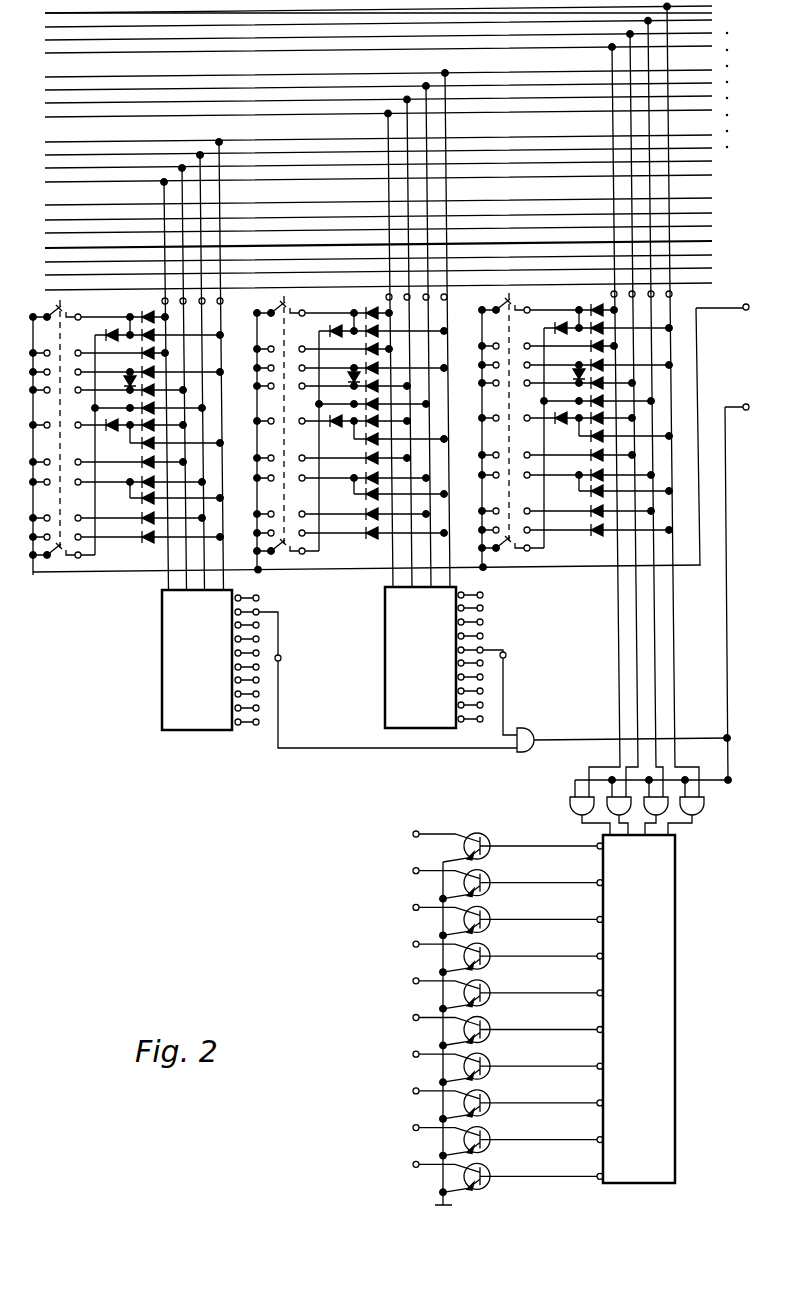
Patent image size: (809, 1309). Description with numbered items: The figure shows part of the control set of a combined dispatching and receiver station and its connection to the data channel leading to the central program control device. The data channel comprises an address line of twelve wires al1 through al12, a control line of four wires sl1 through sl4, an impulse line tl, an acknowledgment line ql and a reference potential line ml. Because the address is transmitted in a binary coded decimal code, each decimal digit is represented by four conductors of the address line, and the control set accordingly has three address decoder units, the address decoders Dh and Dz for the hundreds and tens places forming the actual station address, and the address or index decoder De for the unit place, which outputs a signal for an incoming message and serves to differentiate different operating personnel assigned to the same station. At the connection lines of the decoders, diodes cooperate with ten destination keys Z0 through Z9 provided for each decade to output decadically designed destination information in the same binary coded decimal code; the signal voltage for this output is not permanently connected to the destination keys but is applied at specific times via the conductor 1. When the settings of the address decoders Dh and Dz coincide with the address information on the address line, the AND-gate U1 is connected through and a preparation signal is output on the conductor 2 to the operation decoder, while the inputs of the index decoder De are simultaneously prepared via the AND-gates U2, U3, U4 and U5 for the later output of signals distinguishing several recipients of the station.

The address line wire al1 is at (705, 8).
The address line wire al12 is at (704, 176).
The control line wire sl1 is at (705, 201).
The control line wire sl4 is at (705, 233).
The reference potential line ml is at (706, 244).
The impulse line tl is at (710, 270).
The acknowledgment line ql is at (705, 285).
The destination key Z9 is at (277, 302).
The destination key Z0 is at (280, 569).
The address decoder (hundreds place) Dh is at (162, 727).
The address decoder (tens place) Dz is at (385, 724).
The AND-gate U1 is at (527, 733).
The AND-gate U2 is at (571, 798).
The AND-gate U3 is at (608, 808).
The AND-gate U4 is at (662, 810).
The AND-gate U5 is at (700, 804).
The address or index decoder De is at (736, 1048).
The conductor 1 is at (743, 312).
The conductor 2 is at (746, 411).